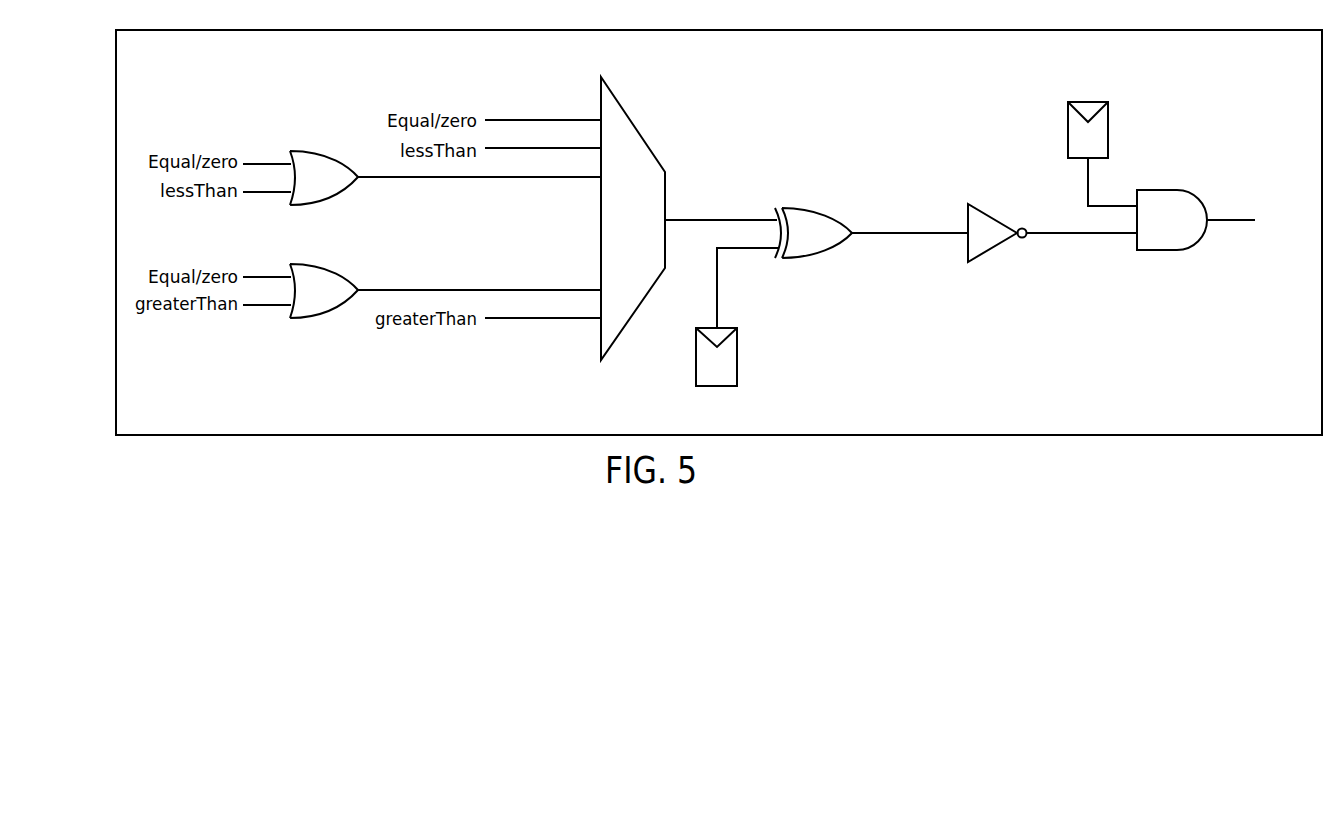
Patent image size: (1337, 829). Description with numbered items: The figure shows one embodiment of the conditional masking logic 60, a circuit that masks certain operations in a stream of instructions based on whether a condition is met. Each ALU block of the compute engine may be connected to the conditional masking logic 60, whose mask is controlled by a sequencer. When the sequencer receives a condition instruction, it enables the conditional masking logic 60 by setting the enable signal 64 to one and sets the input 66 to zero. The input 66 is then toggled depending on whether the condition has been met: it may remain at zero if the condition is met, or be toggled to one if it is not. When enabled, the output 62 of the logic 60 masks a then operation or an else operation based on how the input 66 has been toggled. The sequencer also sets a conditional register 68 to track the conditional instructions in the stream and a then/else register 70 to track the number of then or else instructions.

The conditional masking logic 60 is at (945, 60).
The output 62 is at (1218, 219).
The enable signal 64 is at (1090, 197).
The input 66 is at (718, 312).
The conditional register 68 is at (1093, 102).
The then/else register 70 is at (738, 360).